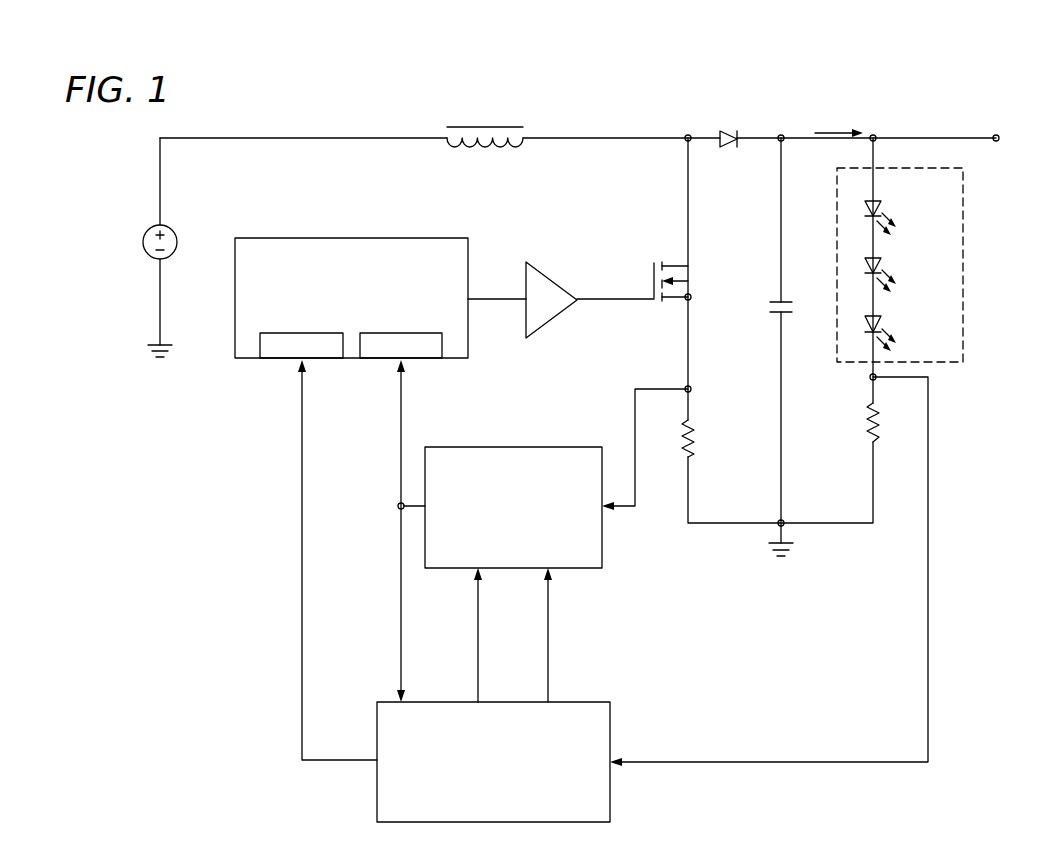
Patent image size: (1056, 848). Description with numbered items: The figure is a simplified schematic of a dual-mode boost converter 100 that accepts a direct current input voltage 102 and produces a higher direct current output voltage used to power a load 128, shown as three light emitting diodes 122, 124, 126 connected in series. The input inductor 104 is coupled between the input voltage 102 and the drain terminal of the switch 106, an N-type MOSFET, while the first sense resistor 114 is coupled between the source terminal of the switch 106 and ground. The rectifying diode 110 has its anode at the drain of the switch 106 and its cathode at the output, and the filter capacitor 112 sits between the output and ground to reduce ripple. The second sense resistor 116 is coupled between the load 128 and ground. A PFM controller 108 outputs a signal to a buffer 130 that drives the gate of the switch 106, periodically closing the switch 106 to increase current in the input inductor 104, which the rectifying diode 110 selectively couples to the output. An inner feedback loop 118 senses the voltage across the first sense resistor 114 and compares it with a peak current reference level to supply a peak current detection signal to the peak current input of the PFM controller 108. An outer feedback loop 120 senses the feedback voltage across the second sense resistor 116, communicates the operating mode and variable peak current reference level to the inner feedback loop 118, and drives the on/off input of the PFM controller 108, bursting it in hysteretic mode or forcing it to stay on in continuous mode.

The dual-mode boost converter 100 is at (568, 82).
The input voltage 102 is at (153, 228).
The input inductor 104 is at (483, 126).
The switch 106 is at (672, 262).
The PFM controller 108 is at (348, 238).
The rectifying diode 110 is at (729, 131).
The filter capacitor 112 is at (776, 297).
The first sense resistor 114 is at (696, 440).
The second sense resistor 116 is at (868, 422).
The inner feedback loop 118 is at (545, 447).
The outer feedback loop 120 is at (540, 822).
The light emitting diode 122 is at (882, 208).
The light emitting diode 124 is at (882, 265).
The light emitting diode 126 is at (882, 323).
The load 128 is at (964, 218).
The buffer 130 is at (558, 274).